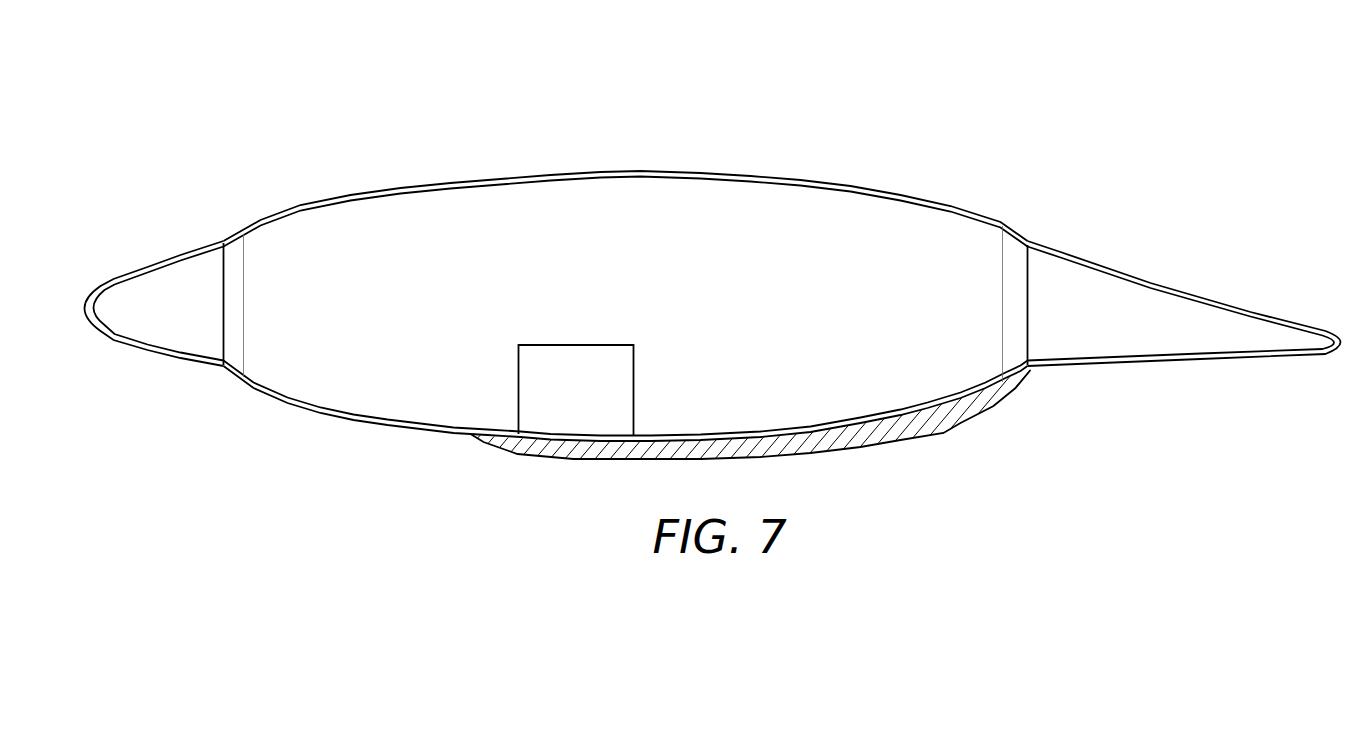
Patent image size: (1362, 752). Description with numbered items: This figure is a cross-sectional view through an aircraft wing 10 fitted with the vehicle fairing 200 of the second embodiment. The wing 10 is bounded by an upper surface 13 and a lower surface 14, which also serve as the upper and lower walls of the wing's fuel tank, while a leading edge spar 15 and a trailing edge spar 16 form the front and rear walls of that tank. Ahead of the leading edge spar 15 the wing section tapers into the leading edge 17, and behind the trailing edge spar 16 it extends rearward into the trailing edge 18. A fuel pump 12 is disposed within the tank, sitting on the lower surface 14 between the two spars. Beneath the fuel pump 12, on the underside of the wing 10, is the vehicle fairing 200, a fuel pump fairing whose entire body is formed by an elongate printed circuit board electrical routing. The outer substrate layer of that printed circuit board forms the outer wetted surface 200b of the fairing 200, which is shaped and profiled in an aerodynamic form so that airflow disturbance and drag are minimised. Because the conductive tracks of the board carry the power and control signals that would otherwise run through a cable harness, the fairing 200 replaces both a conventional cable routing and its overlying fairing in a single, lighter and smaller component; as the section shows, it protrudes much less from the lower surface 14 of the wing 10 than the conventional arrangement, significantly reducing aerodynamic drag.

The aircraft wing 10 is at (890, 92).
The fuel pump 12 is at (636, 353).
The upper surface 13 is at (603, 166).
The lower surface 14 is at (311, 410).
The leading edge spar 15 is at (236, 258).
The trailing edge spar 16 is at (1013, 245).
The leading edge 17 is at (118, 275).
The trailing edge 18 is at (1322, 326).
The vehicle fairing 200 is at (950, 436).
The outer wetted surface 200b is at (575, 458).